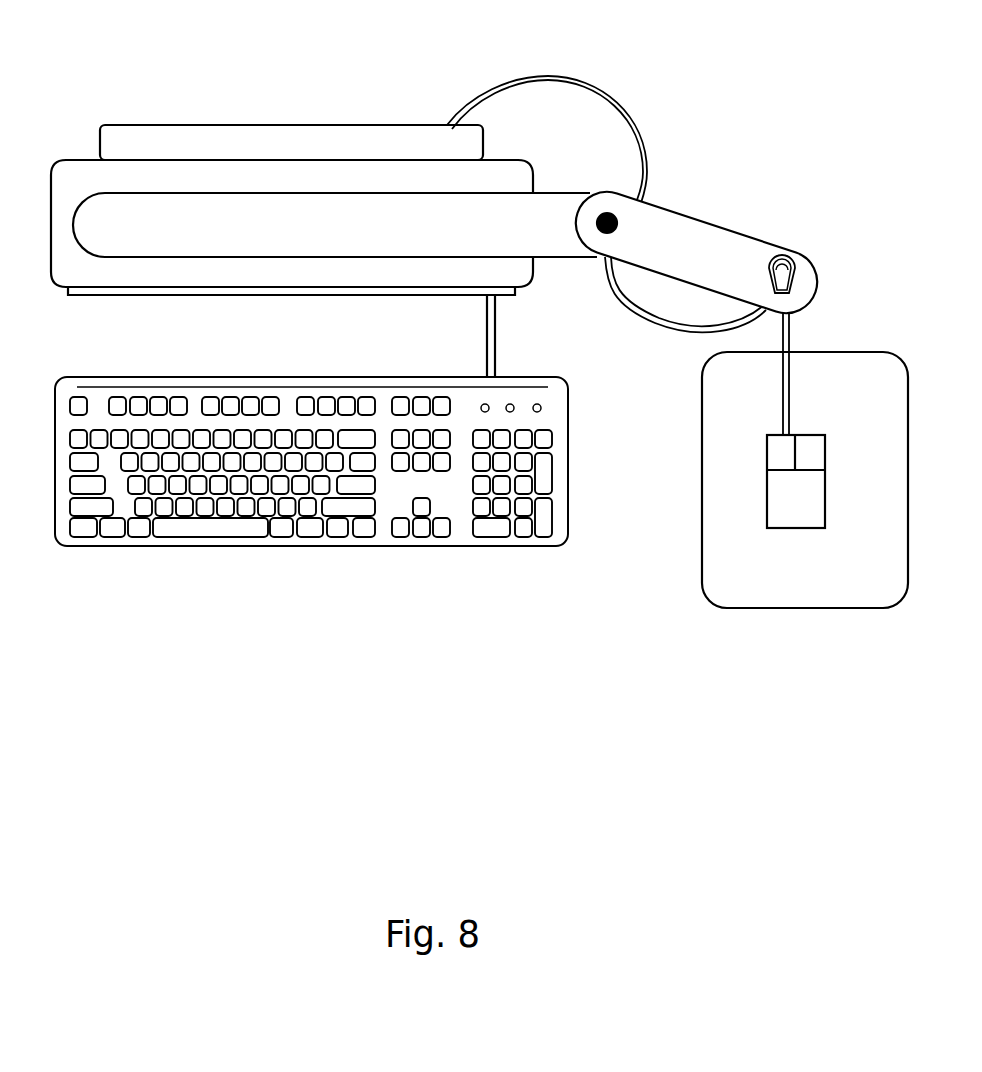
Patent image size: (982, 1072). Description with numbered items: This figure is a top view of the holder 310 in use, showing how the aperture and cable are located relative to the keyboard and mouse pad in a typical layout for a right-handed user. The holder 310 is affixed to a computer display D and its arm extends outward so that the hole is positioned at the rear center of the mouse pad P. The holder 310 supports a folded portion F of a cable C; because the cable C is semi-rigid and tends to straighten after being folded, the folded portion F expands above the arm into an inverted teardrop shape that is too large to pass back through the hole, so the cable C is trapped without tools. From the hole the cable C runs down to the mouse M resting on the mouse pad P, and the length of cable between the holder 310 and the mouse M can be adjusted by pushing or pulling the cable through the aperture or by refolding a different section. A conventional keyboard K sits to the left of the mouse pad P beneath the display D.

The computer display D is at (393, 108).
The holder 310 is at (572, 143).
The folded portion F is at (790, 235).
The cable C is at (803, 380).
The mouse pad P is at (697, 608).
The mouse M is at (805, 542).
The keyboard K is at (328, 570).